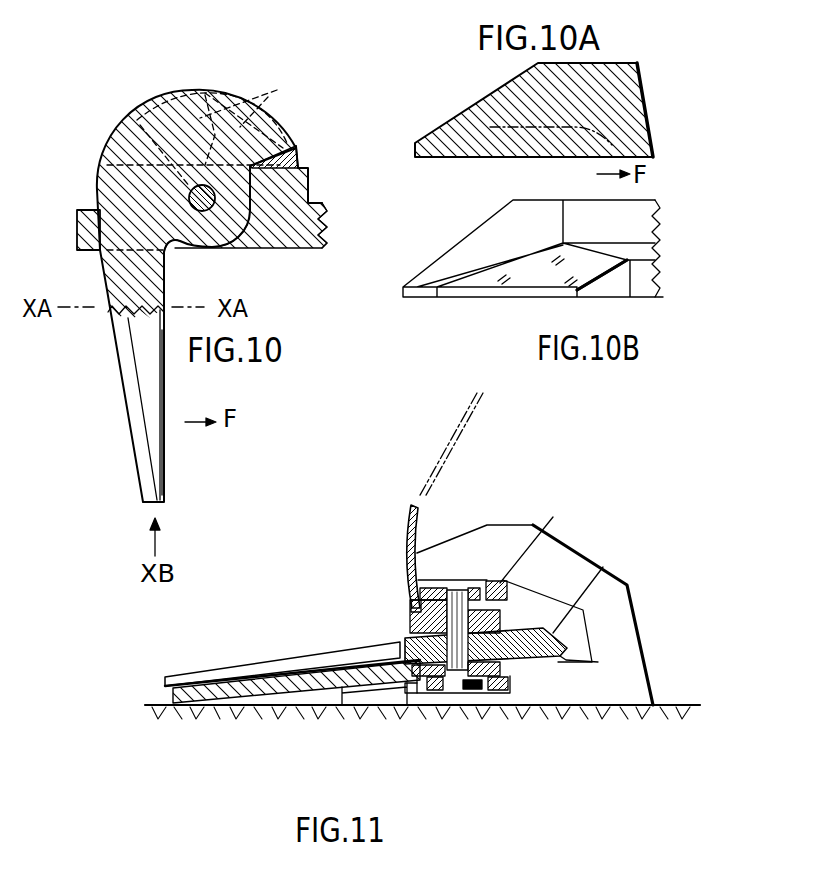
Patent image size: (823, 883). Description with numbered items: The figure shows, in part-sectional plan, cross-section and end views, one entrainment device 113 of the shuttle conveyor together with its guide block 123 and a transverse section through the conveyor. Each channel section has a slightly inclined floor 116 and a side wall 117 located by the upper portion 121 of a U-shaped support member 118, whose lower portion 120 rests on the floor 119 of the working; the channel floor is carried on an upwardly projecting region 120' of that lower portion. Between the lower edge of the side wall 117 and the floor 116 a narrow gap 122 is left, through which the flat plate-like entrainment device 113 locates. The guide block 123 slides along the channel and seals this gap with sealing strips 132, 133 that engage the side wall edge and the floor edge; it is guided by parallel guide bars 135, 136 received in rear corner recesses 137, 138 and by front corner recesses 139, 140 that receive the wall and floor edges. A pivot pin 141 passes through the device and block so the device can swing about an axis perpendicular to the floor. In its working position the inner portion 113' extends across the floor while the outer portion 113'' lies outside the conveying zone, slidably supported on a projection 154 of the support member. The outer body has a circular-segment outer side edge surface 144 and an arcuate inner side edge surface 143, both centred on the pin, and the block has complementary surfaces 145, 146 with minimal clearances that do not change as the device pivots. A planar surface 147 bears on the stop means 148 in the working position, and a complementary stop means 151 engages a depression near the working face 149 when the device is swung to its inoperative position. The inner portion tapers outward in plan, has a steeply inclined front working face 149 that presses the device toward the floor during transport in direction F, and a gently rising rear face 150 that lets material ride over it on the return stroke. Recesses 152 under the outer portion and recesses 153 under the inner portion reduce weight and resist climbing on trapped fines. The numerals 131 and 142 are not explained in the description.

In FIG. 10, the entrainment device 113 is at (173, 296).
In FIG. 10, the inner portion 113' is at (118, 405).
In FIG. 11, the inner portion 113' is at (292, 653).
In FIG. 10, the outer portion 113'' is at (245, 93).
In FIG. 11, the outer portion 113'' is at (616, 643).
In FIG. 11, the floor 116 is at (223, 693).
In FIG. 11, the side wall 117 is at (405, 560).
In FIG. 11, the support member 118 is at (557, 558).
In FIG. 11, the floor of the working 119 is at (666, 702).
In FIG. 11, the lower portion 120 is at (423, 731).
In FIG. 11, the upwardly projecting region 120' is at (358, 726).
In FIG. 11, the upper portion 121 is at (438, 560).
In FIG. 11, the gap 122 is at (420, 608).
In FIG. 10, the guide block 123 is at (315, 226).
In FIG. 11, the clamp block 131 is at (407, 624).
In FIG. 11, the sealing strip 132 is at (450, 598).
In FIG. 11, the sealing strip 133 is at (442, 703).
In FIG. 11, the guide bar 135 is at (533, 538).
In FIG. 11, the guide bar 136 is at (500, 703).
In FIG. 11, the rear corner recess 137 is at (503, 601).
In FIG. 11, the rear corner recess 138 is at (480, 703).
In FIG. 11, the front corner recess 139 is at (410, 593).
In FIG. 11, the front corner recess 140 is at (410, 680).
In FIG. 10, the pivot pin 141 is at (283, 185).
In FIG. 11, the pivot pin 141 is at (505, 678).
In FIG. 10, the wedge surface 142 is at (177, 250).
In FIG. 11, the wedge surface 142 is at (308, 641).
In FIG. 10, the inner side edge surface 143 is at (166, 94).
In FIG. 10, the outer side edge surface 144 is at (243, 247).
In FIG. 10, the complementary surface 145 is at (273, 220).
In FIG. 10, the complementary surface 146 is at (82, 226).
In FIG. 10, the planar surface 147 is at (272, 135).
In FIG. 10, the stop means 148 is at (290, 154).
In FIG. 10, the working face 149 is at (166, 468).
In FIG. 10A, the working face 149 is at (647, 77).
In FIG. 10B, the working face 149 is at (634, 278).
In FIG. 10, the rear face 150 is at (140, 352).
In FIG. 10A, the rear face 150 is at (489, 92).
In FIG. 10B, the rear face 150 is at (524, 274).
In FIG. 10, the complementary stop means 151 is at (233, 247).
In FIG. 10, the recess 152 is at (251, 95).
In FIG. 10A, the recess 153 is at (478, 134).
In FIG. 11, the projection 154 is at (566, 655).